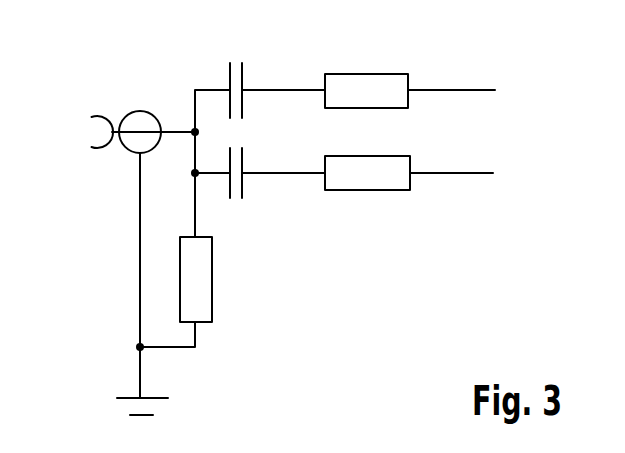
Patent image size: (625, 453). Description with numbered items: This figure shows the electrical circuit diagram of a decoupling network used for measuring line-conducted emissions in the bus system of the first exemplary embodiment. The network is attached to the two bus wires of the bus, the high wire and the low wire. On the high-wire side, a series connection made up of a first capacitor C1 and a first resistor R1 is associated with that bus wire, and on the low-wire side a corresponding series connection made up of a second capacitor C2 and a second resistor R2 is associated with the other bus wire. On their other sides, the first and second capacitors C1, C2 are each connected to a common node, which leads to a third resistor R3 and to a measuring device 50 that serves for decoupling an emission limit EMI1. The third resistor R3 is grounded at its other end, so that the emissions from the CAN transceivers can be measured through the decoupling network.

The measuring device 50 is at (140, 107).
The emission limit EMI1 is at (76, 132).
The first capacitor C1 is at (242, 67).
The second capacitor C2 is at (242, 190).
The first resistor R1 is at (366, 74).
The second resistor R2 is at (367, 190).
The third resistor R3 is at (212, 278).